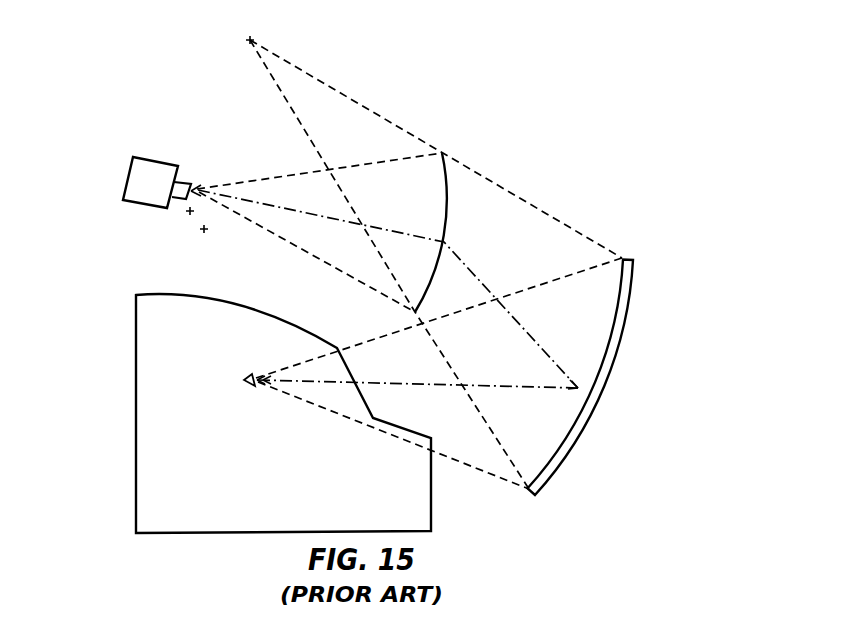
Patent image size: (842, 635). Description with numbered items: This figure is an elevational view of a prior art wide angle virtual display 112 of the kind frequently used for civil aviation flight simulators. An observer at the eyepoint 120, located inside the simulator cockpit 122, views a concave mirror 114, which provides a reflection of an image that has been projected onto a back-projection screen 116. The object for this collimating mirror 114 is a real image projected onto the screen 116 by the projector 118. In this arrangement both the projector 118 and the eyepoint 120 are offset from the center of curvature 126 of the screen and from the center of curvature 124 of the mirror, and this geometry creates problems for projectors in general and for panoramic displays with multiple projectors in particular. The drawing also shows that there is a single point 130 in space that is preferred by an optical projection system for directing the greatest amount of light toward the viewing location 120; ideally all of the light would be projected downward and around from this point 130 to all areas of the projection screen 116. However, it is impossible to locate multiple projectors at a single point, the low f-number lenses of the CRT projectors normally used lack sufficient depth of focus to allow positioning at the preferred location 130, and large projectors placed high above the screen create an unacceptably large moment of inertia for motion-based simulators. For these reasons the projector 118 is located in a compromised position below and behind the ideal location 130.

The wide angle virtual display 112 is at (645, 217).
The concave mirror 114 is at (605, 365).
The back-projection screen 116 is at (447, 183).
The projector 118 is at (138, 183).
The eyepoint 120 is at (245, 385).
The simulator cockpit 122 is at (158, 323).
The center of curvature of the mirror 124 is at (203, 232).
The center of curvature of the screen 126 is at (188, 212).
The single preferred point 130 is at (250, 40).